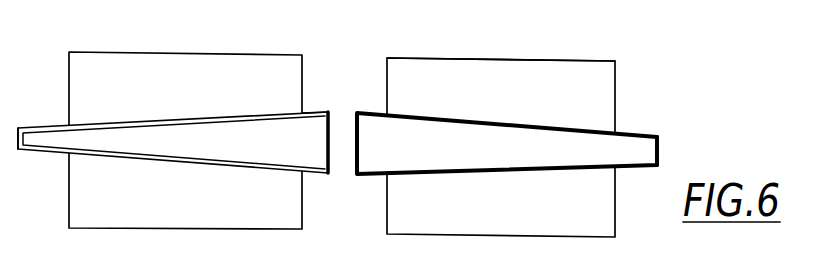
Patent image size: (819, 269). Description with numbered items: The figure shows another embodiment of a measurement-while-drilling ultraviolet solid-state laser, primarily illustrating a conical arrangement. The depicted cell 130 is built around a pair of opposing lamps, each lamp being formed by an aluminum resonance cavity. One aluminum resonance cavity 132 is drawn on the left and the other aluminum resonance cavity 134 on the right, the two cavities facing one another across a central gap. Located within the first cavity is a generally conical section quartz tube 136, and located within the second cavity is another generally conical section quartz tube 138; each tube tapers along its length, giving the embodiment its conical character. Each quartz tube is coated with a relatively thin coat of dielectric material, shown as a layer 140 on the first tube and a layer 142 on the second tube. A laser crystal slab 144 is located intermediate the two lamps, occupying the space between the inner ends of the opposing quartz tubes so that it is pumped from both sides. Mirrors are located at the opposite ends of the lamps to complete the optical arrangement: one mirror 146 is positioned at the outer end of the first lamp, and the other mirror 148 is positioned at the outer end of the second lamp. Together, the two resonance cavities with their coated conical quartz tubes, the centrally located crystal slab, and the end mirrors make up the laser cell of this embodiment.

The cell 130 is at (522, 51).
The aluminum resonance cavity 132 is at (132, 53).
The aluminum resonance cavity 134 is at (615, 82).
The generally conical section quartz tube 136 is at (148, 158).
The generally conical section quartz tube 138 is at (527, 170).
The layer of dielectric material 140 is at (262, 113).
The layer of dielectric material 142 is at (443, 114).
The laser crystal slab 144 is at (343, 160).
The mirror 146 is at (18, 130).
The mirror 148 is at (657, 137).